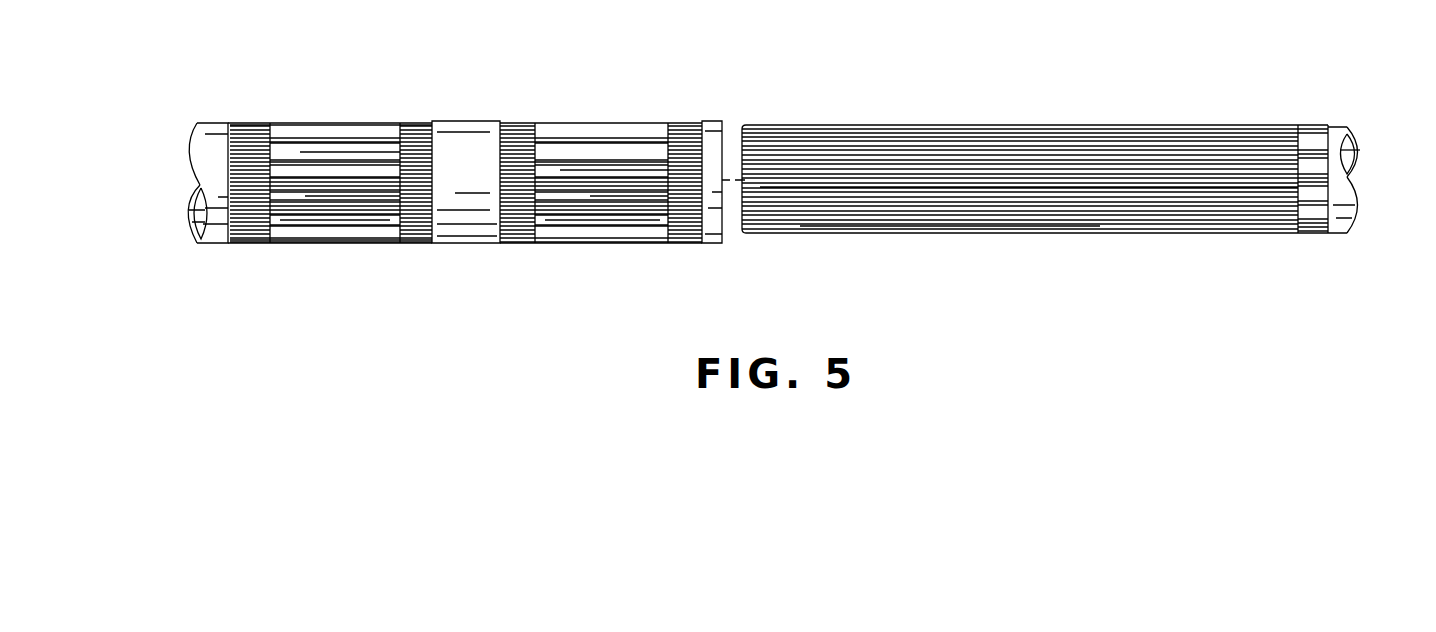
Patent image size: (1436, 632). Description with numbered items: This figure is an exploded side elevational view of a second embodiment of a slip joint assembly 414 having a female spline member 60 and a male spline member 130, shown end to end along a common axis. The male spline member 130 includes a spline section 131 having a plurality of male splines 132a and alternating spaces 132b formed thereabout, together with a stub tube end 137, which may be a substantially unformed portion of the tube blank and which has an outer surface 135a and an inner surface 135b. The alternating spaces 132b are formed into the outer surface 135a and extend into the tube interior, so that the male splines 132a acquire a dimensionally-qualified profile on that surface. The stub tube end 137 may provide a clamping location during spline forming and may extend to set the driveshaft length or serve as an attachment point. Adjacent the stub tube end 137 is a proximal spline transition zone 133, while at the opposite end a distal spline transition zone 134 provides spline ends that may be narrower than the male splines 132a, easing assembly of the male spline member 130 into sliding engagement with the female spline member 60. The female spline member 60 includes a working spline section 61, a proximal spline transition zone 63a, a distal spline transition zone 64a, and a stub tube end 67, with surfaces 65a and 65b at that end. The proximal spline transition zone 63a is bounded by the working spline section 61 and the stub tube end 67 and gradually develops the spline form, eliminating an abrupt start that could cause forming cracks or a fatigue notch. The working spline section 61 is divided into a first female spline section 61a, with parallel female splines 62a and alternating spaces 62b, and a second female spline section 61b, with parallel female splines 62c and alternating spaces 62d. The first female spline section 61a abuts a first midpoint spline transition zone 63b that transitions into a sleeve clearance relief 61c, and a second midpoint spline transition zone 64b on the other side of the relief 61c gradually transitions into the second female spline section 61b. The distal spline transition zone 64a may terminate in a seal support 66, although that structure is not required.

The slip joint assembly 414 is at (646, 305).
The female spline member 60 is at (473, 103).
The working spline section 61 is at (668, 243).
The first female spline section 61a is at (295, 126).
The second female spline section 61b is at (638, 123).
The sleeve clearance relief 61c is at (455, 122).
The female splines 62a is at (324, 150).
The alternating spaces 62b is at (368, 172).
The female splines 62c is at (557, 180).
The alternating spaces 62d is at (596, 167).
The proximal spline transition zone 63a is at (252, 243).
The first midpoint spline transition zone 63b is at (418, 125).
The distal spline transition zone 64a is at (687, 123).
The second midpoint spline transition zone 64b is at (515, 125).
The outer surface 65a is at (208, 126).
The inner surface 65b is at (182, 212).
The seal support 66 is at (720, 123).
The stub tube end 67 is at (173, 150).
The male spline member 130 is at (1072, 115).
The spline section 131 is at (1297, 240).
The male splines 132a is at (1005, 138).
The alternating spaces 132b is at (895, 138).
The proximal spline transition zone 133 is at (1315, 128).
The distal spline transition zone 134 is at (747, 243).
The outer surface 135a is at (1340, 222).
The inner surface 135b is at (1358, 148).
The stub tube end 137 is at (1368, 215).